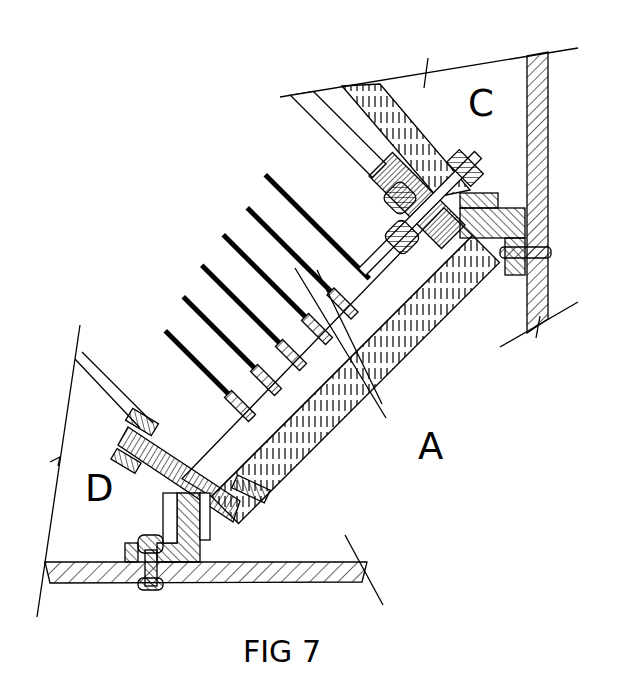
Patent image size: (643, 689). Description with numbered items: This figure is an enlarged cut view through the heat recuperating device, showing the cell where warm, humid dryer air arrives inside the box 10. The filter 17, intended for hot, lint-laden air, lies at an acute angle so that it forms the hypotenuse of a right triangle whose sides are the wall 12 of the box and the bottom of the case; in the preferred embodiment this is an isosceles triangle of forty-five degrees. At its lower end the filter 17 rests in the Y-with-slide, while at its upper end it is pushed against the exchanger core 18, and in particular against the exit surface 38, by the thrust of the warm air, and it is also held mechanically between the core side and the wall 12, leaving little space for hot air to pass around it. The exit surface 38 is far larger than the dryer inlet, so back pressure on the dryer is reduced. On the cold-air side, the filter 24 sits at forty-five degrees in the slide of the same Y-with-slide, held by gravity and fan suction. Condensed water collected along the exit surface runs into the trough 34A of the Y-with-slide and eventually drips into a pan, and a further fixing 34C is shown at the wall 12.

The box 10 is at (338, 581).
The wall 12 is at (546, 163).
The filter 17 is at (383, 354).
The exchanger 18 is at (258, 243).
The filter 24 is at (382, 85).
The trough of Y-with-slide 34A is at (259, 486).
The bolt fastener 34C is at (465, 162).
The exit surface 38 is at (350, 314).